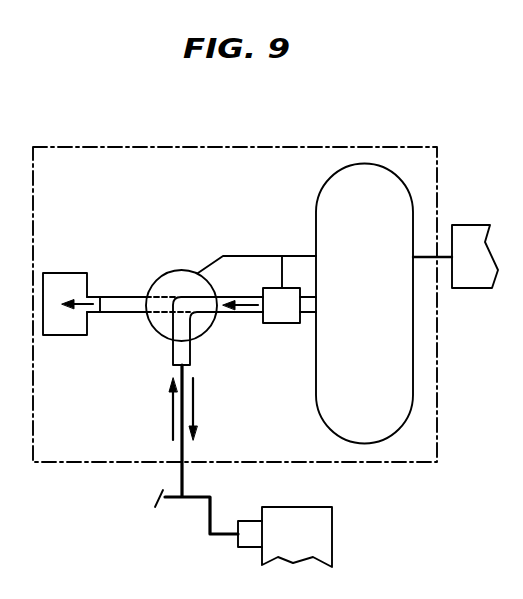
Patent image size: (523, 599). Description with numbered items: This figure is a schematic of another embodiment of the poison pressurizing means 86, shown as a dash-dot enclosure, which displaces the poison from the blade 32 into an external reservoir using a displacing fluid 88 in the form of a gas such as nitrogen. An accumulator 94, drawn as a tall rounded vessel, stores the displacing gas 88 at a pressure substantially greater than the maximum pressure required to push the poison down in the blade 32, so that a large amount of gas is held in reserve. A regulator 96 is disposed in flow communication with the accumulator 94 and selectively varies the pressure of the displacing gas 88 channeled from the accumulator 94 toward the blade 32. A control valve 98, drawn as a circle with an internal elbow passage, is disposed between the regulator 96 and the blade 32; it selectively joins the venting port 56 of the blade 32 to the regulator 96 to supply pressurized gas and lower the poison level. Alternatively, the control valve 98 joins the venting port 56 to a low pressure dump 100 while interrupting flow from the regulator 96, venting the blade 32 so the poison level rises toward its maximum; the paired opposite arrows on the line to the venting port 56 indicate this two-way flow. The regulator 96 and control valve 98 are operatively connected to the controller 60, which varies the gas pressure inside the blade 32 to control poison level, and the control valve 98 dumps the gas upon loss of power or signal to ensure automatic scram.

The poison pressurizing means 86 is at (208, 132).
The low pressure dump 100 is at (62, 272).
The control valve 98 is at (160, 276).
The regulator 96 is at (283, 323).
The accumulator 94 is at (316, 210).
The controller 60 is at (470, 224).
The displacing fluid 88 is at (195, 410).
The venting port 56 is at (243, 548).
The blade 32 is at (333, 518).